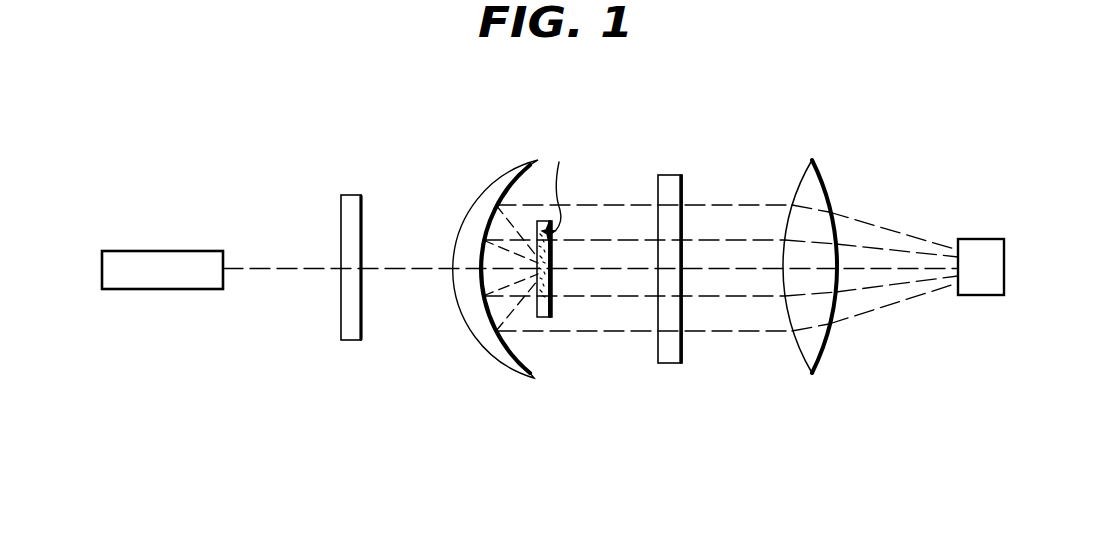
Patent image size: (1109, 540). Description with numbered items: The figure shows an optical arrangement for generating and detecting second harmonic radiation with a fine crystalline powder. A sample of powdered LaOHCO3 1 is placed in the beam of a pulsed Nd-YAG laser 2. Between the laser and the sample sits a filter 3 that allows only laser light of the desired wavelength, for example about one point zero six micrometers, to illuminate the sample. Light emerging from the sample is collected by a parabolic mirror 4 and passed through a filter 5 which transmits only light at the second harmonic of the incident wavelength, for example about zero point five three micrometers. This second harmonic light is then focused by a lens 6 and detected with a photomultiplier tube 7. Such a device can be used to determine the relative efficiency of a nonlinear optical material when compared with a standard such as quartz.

The sample of powdered LaOHCO3 1 is at (553, 306).
The pulsed Nd-YAG laser 2 is at (172, 279).
The filter 3 is at (361, 309).
The parabolic mirror 4 is at (482, 345).
The filter 5 is at (658, 352).
The lens 6 is at (802, 357).
The photomultiplier tube 7 is at (986, 280).